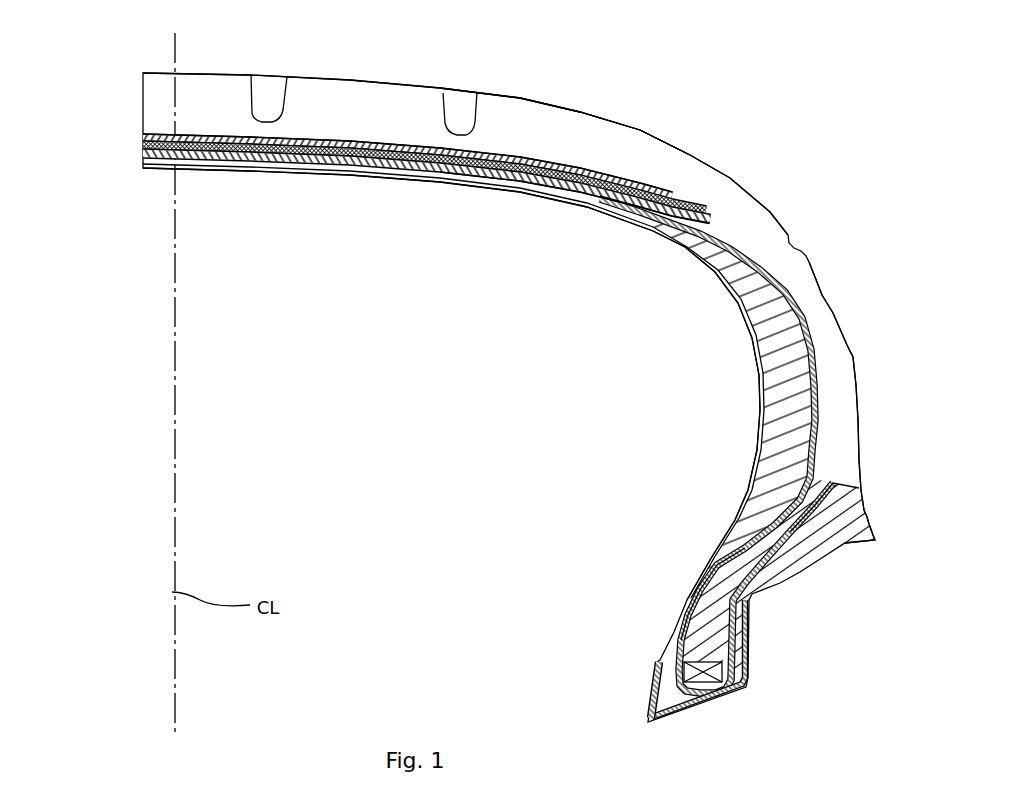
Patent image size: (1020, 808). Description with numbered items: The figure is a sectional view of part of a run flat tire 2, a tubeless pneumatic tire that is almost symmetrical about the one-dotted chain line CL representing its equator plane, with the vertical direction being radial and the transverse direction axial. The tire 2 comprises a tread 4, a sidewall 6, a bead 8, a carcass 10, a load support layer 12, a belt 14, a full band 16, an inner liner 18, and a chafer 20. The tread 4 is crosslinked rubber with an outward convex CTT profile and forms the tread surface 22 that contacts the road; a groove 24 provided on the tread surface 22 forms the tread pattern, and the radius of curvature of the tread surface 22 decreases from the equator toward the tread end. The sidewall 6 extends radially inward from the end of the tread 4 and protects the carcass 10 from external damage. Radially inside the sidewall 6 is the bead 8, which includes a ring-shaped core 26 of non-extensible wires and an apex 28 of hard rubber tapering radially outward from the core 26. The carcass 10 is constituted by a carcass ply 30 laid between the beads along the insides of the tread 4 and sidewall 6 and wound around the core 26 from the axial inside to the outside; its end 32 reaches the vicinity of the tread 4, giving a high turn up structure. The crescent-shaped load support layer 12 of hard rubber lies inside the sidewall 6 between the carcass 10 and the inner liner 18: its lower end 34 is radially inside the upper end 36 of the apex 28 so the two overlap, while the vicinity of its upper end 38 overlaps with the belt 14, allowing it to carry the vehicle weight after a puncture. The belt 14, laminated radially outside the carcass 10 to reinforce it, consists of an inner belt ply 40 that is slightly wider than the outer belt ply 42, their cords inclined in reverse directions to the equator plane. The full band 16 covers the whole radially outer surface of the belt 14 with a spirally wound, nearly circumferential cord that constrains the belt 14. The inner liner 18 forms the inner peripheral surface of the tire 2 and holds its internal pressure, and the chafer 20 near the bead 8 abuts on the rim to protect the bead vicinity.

The tire 2 is at (836, 80).
The tread 4 is at (530, 118).
The sidewall 6 is at (840, 373).
The bead 8 is at (662, 658).
The carcass 10 is at (797, 301).
The load support layer 12 is at (775, 376).
The belt 14 is at (371, 167).
The full band 16 is at (372, 138).
The inner liner 18 is at (680, 250).
The chafer 20 is at (653, 700).
The tread surface 22 is at (636, 132).
The groove 24 is at (253, 94).
The core 26 is at (687, 672).
The apex 28 is at (707, 617).
The carcass ply 30 is at (397, 170).
The end of carcass ply 32 is at (540, 190).
The lower end of load support layer 34 is at (688, 597).
The upper end of apex 36 is at (817, 497).
The upper end of load support layer 38 is at (618, 203).
The inner belt ply 40 is at (140, 148).
The outer belt ply 42 is at (140, 143).